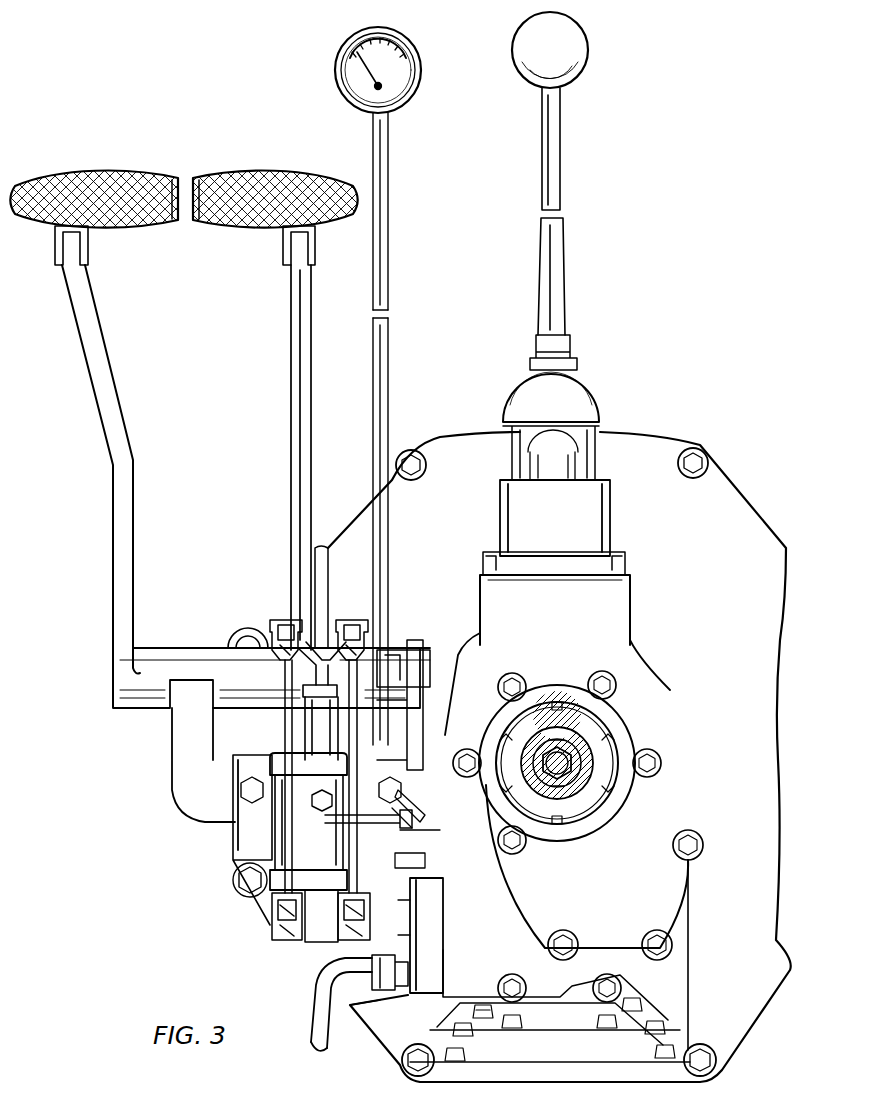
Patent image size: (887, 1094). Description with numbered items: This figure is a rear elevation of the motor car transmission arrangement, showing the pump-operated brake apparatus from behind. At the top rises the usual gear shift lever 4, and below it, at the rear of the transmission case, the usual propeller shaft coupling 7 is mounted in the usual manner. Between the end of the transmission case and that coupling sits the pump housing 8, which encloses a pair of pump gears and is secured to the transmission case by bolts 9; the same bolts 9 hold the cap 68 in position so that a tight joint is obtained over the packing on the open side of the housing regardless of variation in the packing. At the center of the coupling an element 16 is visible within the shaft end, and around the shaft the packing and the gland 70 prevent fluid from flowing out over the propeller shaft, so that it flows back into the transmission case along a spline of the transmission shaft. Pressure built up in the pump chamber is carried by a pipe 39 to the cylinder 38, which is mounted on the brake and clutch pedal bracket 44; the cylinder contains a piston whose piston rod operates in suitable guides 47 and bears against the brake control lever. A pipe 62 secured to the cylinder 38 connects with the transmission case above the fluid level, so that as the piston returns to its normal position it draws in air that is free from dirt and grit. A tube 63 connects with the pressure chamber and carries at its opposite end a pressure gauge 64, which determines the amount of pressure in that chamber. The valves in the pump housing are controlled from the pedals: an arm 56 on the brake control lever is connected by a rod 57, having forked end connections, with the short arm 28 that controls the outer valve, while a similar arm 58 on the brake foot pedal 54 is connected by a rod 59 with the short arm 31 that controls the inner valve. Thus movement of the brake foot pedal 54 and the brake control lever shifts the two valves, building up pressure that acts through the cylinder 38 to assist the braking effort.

The gear shift lever 4 is at (548, 258).
The propeller shaft coupling 7 is at (592, 753).
The pump housing 8 is at (616, 727).
The bolts 9 is at (694, 840).
The shaft hexagonal end 16 is at (560, 766).
The short arm 28 is at (342, 941).
The short arm 31 is at (290, 941).
The cylinder 38 is at (278, 845).
The pipe 39 is at (322, 1046).
The brake and clutch pedal bracket 44 is at (183, 784).
The guides 47 is at (312, 732).
The brake foot pedal 54 is at (297, 407).
The arm 56 is at (351, 620).
The rod 57 is at (380, 688).
The arm 58 is at (285, 622).
The rod 59 is at (280, 722).
The pipe 62 is at (330, 822).
The tube 63 is at (430, 873).
The pressure gauge 64 is at (336, 70).
The cap 68 is at (553, 757).
The gland 70 is at (570, 812).